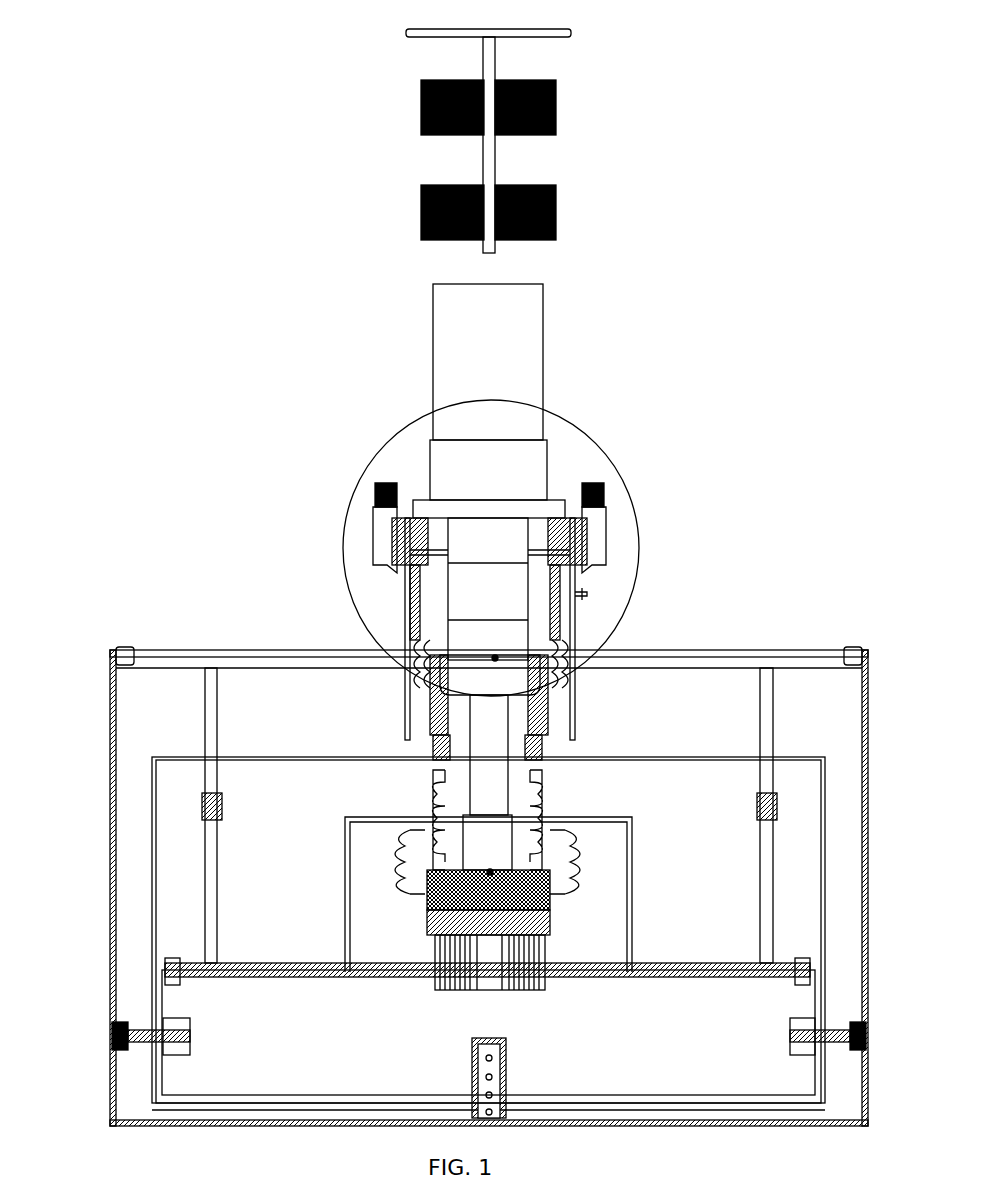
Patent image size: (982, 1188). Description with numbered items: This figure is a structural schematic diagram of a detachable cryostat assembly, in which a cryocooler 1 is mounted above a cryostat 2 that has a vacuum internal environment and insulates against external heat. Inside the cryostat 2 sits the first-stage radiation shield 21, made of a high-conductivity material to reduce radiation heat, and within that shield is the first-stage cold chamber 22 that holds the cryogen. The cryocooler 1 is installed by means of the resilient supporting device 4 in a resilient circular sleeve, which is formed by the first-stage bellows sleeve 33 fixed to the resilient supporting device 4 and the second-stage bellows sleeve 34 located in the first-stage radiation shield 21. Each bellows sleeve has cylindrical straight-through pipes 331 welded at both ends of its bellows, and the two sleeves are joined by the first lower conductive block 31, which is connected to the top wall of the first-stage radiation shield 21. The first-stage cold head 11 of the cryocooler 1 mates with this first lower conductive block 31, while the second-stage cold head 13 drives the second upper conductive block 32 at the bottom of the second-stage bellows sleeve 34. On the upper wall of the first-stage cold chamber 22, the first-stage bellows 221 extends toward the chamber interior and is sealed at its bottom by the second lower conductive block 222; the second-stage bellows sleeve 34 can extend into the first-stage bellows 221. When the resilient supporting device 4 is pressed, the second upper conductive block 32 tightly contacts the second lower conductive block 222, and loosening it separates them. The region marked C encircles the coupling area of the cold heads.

The cryocooler 1 is at (520, 338).
The coupling region C is at (572, 455).
The resilient supporting device 4 is at (600, 500).
The cryostat 2 is at (745, 655).
The first-stage radiation shield 21 is at (163, 748).
The first-stage cold chamber 22 is at (333, 963).
The first-stage bellows sleeve 33 is at (418, 720).
The first-stage cold head 11 is at (505, 658).
The first lower conductive block 31 is at (548, 730).
The cylindrical straight-through pipe 331 is at (430, 720).
The second-stage bellows sleeve 34 is at (438, 772).
The first-stage bellows 221 is at (562, 856).
The second upper conductive block 32 is at (553, 893).
The second lower conductive block 222 is at (553, 920).
The second-stage cold head 13 is at (548, 925).